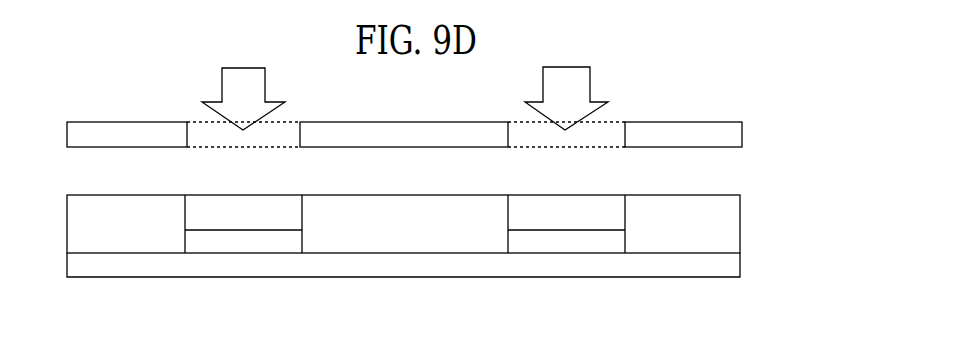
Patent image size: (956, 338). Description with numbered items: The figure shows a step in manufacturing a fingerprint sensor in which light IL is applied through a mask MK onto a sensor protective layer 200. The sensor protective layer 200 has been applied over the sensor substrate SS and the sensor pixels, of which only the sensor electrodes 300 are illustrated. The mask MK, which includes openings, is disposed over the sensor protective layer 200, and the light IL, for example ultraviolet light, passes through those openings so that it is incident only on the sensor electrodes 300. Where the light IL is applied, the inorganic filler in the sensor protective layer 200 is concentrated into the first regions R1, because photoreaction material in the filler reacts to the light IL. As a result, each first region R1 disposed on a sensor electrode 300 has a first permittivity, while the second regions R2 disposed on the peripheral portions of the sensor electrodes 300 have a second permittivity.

The mask MK is at (748, 122).
The light IL is at (268, 78).
The sensor protective layer 200 is at (746, 195).
The sensor substrate SS is at (742, 261).
The sensor electrode 300 is at (252, 248).
The first region R1 is at (234, 205).
The second region R2 is at (126, 205).